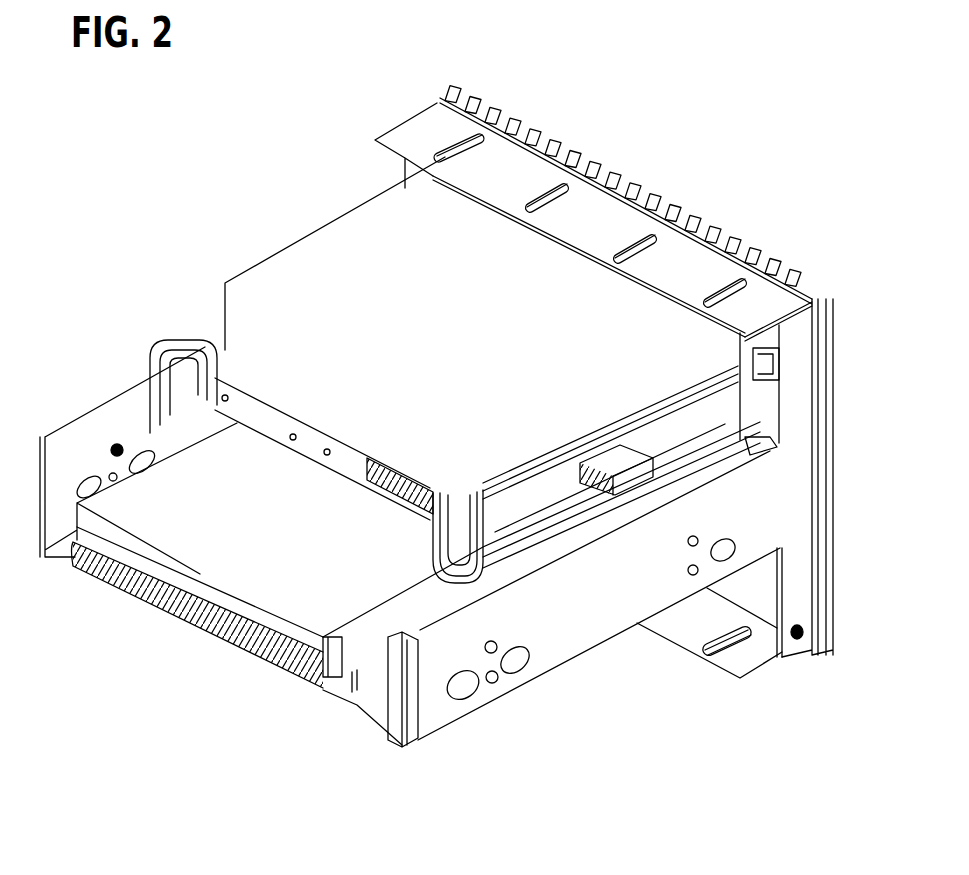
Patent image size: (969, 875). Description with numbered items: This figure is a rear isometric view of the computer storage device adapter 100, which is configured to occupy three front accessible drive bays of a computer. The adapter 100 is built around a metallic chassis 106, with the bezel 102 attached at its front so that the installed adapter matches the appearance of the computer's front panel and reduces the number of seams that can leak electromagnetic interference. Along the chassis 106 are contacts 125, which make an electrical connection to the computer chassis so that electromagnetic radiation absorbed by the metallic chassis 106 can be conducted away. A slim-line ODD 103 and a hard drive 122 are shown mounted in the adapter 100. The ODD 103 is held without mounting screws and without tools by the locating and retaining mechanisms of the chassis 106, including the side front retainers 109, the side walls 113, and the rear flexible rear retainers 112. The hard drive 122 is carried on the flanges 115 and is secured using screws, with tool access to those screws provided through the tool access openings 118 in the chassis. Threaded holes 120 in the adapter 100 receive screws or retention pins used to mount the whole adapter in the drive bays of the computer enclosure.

The computer storage device adapter 100 is at (690, 138).
The bezel 102 is at (472, 95).
The slim-line ODD 103 is at (300, 244).
The metallic chassis 106 is at (601, 622).
The side front retainers 109 is at (738, 373).
The rear flexible rear retainers 112 is at (180, 336).
The side walls 113 is at (663, 443).
The flanges 115 is at (390, 668).
The tool access openings 118 is at (478, 693).
The threaded holes 120 is at (690, 563).
The hard drive 122 is at (80, 525).
The contacts 125 is at (440, 148).